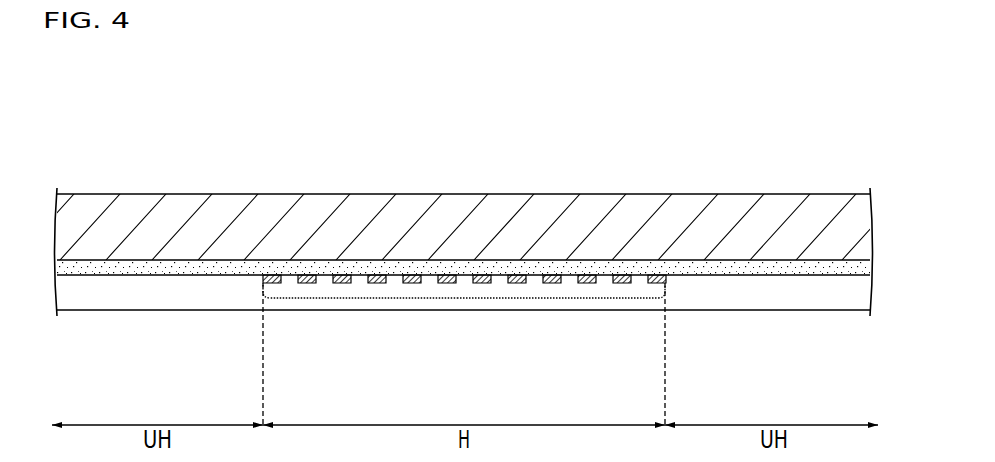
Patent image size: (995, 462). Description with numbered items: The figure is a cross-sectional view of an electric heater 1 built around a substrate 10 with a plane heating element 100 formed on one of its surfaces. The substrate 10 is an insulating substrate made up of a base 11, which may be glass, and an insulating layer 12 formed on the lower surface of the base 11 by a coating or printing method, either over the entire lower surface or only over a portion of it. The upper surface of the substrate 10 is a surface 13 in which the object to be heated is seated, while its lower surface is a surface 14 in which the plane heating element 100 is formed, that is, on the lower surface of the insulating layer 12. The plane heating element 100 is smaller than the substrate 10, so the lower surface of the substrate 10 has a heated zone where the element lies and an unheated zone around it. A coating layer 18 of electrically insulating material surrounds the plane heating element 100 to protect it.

The electric heater 1 is at (858, 148).
The substrate 10 is at (924, 220).
The base 11 is at (860, 230).
The insulating layer 12 is at (870, 267).
The surface (upper surface of the substrate) 13 is at (230, 194).
The surface (lower surface of the substrate) 14 is at (172, 274).
The coating layer 18 is at (862, 293).
The plane heating element 100 is at (469, 298).